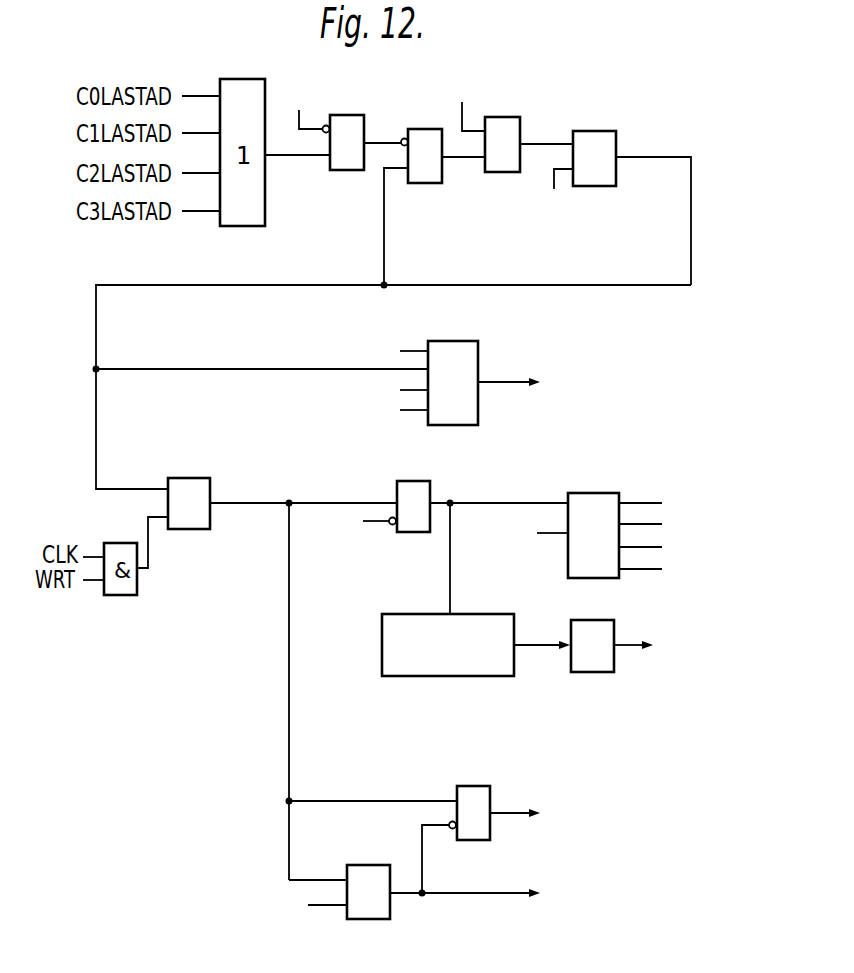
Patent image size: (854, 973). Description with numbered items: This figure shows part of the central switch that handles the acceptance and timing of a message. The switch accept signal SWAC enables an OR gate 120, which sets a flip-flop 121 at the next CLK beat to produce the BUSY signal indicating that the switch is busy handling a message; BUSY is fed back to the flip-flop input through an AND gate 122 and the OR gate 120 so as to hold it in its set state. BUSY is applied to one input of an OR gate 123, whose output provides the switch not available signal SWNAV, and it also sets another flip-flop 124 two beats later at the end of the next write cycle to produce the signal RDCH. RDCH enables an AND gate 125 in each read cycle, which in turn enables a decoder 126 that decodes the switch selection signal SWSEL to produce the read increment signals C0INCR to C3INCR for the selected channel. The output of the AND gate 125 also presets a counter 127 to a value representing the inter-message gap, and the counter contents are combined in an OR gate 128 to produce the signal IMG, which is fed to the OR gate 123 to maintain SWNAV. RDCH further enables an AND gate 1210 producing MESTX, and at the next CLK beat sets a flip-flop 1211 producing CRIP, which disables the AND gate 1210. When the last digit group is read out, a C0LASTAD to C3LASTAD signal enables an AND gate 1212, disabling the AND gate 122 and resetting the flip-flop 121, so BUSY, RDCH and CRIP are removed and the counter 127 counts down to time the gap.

The AND gate 1212 is at (342, 166).
The AND gate 122 is at (423, 175).
The OR gate 120 is at (497, 167).
The flip-flop 121 is at (593, 135).
The OR gate 123 is at (458, 348).
The flip-flop 124 is at (196, 483).
The AND gate 125 is at (422, 485).
The decoder 126 is at (608, 498).
The counter 127 is at (410, 667).
The OR gate 128 is at (593, 665).
The AND gate 1210 is at (478, 792).
The flip-flop 1211 is at (370, 870).